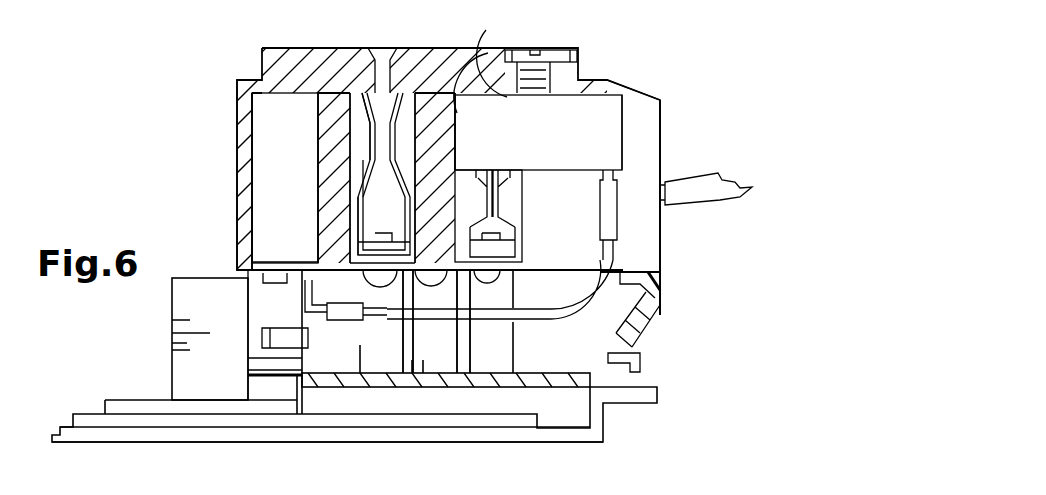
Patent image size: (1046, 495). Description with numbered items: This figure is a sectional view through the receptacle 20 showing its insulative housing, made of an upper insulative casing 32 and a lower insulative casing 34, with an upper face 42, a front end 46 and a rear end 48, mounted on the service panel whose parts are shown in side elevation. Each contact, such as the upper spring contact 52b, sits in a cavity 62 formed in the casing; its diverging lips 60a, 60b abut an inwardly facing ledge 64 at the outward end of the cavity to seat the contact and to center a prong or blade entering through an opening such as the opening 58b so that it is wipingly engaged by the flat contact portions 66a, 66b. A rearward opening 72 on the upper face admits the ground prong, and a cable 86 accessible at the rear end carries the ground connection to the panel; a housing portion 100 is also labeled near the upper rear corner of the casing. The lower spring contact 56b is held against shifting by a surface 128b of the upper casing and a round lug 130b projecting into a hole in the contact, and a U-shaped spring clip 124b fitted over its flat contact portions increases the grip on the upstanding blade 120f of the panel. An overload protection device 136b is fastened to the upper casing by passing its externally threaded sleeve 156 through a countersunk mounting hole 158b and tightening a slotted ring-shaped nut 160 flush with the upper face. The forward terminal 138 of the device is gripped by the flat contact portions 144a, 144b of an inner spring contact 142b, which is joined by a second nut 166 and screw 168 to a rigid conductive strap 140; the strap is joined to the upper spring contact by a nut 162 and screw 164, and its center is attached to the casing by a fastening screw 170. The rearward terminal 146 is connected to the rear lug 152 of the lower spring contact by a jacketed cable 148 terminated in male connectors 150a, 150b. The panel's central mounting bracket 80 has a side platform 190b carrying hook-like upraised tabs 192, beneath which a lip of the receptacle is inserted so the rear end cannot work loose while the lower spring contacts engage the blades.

The receptacle 20 is at (198, 98).
The upper insulative casing 32 is at (240, 135).
The lower insulative casing 34 is at (662, 300).
The upper face 42 is at (309, 43).
The front end 46 is at (233, 172).
The rear end 48 is at (668, 262).
The upper spring contact 52b is at (372, 170).
The lower spring contact 56b is at (254, 384).
The opening 58b is at (390, 55).
The diverging lip 60a is at (357, 110).
The diverging lip 60b is at (440, 118).
The cavity 62 is at (400, 172).
The inwardly facing ledge 64 is at (431, 97).
The flat contact portion 66a is at (377, 123).
The flat contact portion 66b is at (356, 165).
The rearward opening 72 is at (327, 468).
The central mounting bracket 80 is at (183, 0).
The cable 86 is at (748, 198).
The upper housing shoulder 100 is at (640, 92).
The upstanding blade 120f is at (172, 333).
The spring clip 124b is at (258, 333).
The surface 128b is at (262, 278).
The round lug 130b is at (268, 299).
The overload protection device 136b is at (630, 112).
The forward terminal 138 is at (497, 203).
The rigid conductive strap 140 is at (418, 321).
The inner spring contact 142b is at (528, 240).
The flat contact portion 144a is at (466, 185).
The flat contact portion 144b is at (507, 190).
The rearward terminal 146 is at (622, 178).
The jacketed cable 148 is at (570, 318).
The male connector 150a is at (340, 318).
The male connector 150b is at (620, 212).
The rear lug 152 is at (330, 385).
The externally threaded sleeve 156 is at (482, 51).
The mounting hole 158b is at (545, 60).
The ring-shaped nut 160 is at (518, 48).
The nut 162 is at (363, 238).
The screw 164 is at (374, 288).
The second nut 166 is at (513, 250).
The screw 168 is at (497, 283).
The fastening screw 170 is at (479, 321).
The side platform 190b is at (659, 393).
The upraised tab 192 is at (646, 367).